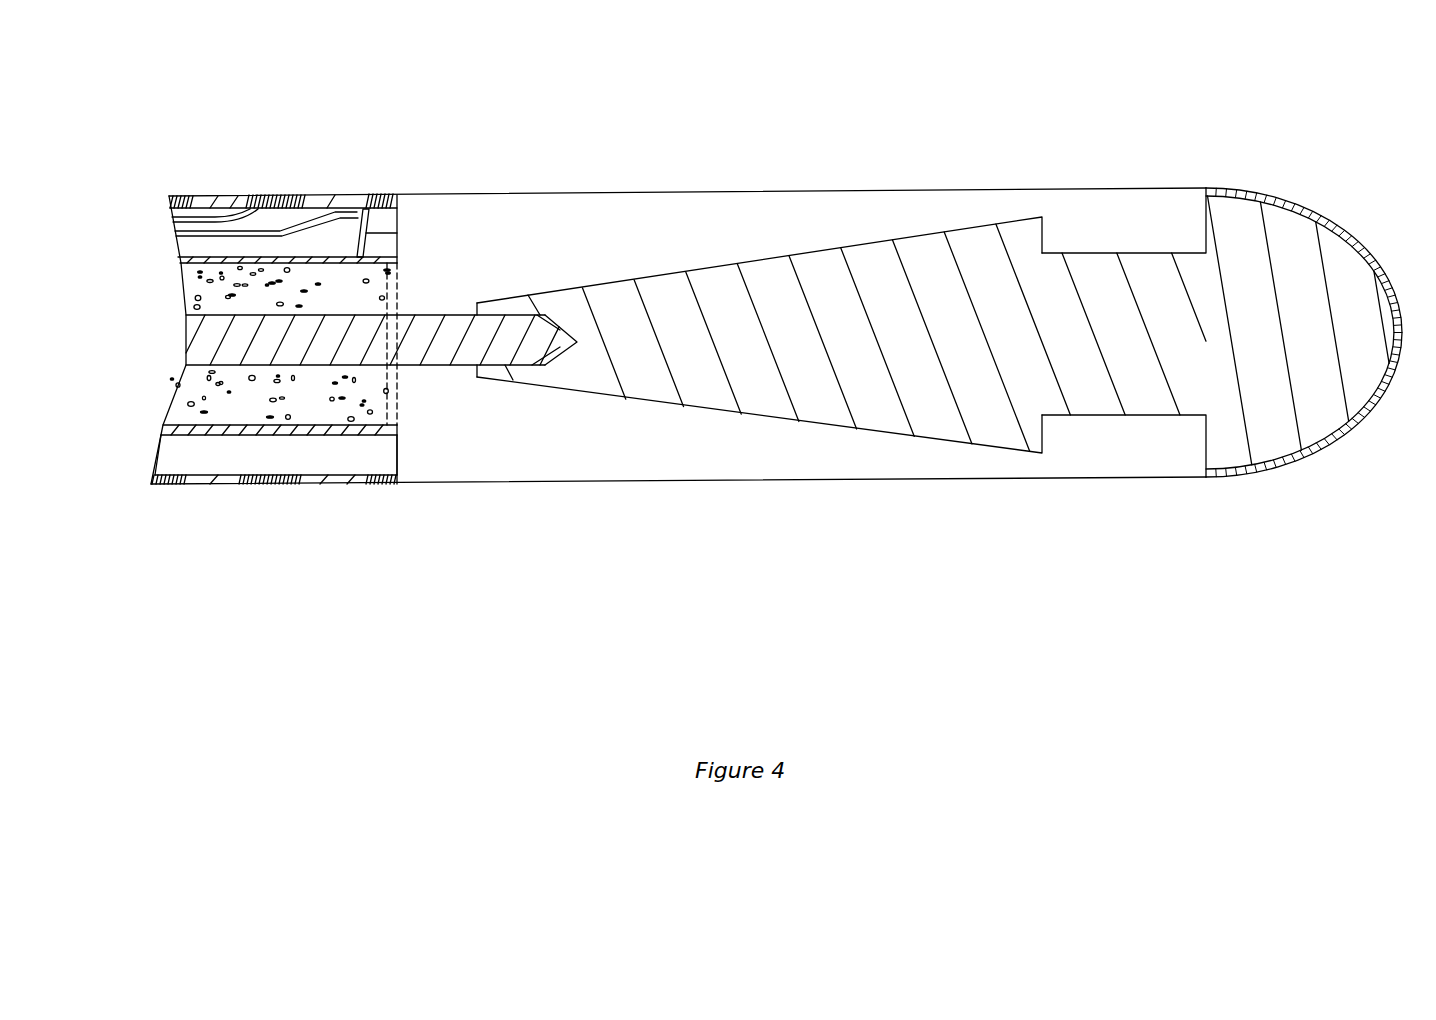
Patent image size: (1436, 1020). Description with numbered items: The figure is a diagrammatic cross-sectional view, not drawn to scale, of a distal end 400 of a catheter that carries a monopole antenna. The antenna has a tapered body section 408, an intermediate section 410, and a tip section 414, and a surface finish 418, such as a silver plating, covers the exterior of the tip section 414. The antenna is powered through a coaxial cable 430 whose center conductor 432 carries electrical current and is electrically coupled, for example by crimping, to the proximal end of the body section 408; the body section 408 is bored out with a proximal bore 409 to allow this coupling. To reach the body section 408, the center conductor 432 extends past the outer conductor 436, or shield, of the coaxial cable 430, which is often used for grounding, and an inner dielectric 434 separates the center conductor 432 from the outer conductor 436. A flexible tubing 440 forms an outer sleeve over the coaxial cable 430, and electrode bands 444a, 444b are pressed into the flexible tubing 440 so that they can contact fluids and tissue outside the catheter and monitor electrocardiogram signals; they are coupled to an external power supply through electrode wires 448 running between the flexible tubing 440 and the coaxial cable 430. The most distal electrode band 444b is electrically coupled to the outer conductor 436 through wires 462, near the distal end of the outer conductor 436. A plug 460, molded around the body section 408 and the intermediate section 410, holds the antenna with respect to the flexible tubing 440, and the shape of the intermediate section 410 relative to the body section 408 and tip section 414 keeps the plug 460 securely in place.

The distal end of catheter 400 is at (1183, 99).
The tapered body section 408 is at (862, 355).
The proximal bore 409 is at (521, 315).
The intermediate section 410 is at (1134, 347).
The tip section 414 is at (1351, 345).
The surface finish 418 is at (1320, 458).
The coaxial cable 430 is at (341, 436).
The center conductor 432 is at (347, 315).
The inner dielectric 434 is at (317, 422).
The outer conductor 436 is at (396, 424).
The flexible tubing 440 is at (267, 195).
The electrode band 444a is at (206, 195).
The electrode band 444b is at (333, 195).
The electrode wires 448 is at (170, 198).
The plug 460 is at (626, 457).
The wires 462 is at (367, 233).